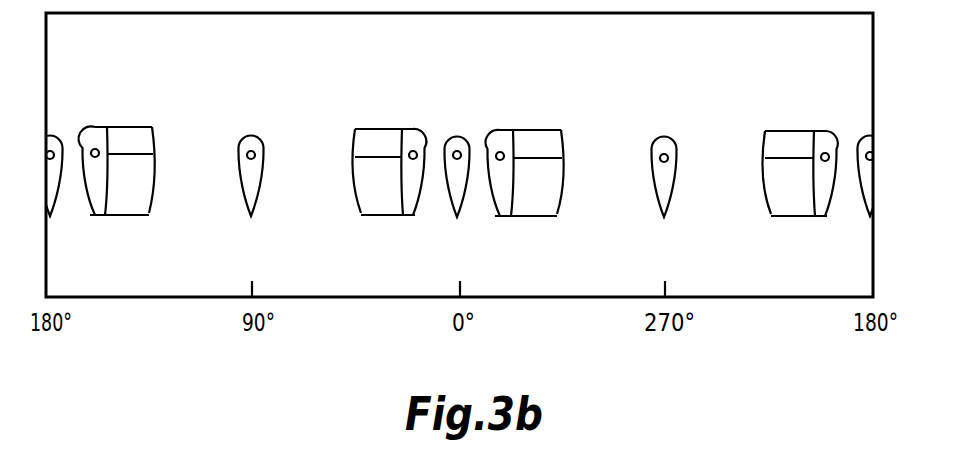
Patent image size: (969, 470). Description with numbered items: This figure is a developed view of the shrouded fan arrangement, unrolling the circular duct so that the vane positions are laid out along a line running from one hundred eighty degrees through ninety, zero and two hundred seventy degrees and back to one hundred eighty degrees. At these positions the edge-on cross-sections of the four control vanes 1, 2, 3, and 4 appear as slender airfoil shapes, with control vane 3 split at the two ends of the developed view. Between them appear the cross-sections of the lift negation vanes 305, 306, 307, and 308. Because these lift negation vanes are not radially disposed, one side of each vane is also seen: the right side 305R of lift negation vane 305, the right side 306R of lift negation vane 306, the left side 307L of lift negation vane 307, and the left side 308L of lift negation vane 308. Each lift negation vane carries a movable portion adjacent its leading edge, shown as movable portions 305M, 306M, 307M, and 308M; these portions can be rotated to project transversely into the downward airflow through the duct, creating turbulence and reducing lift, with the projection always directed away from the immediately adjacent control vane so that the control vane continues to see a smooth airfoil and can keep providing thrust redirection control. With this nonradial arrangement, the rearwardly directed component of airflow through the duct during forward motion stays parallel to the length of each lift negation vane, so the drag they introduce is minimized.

The control vane 1 is at (457, 217).
The control vane 2 is at (251, 216).
The control vane 3 is at (54, 129).
The control vane 4 is at (664, 217).
The lift negation vane 305 is at (402, 129).
The movable portion of lift negation vane 305 305M is at (362, 129).
The right side of lift negation vane 305 305R is at (392, 216).
The lift negation vane 306 is at (107, 127).
The movable portion of lift negation vane 306 306M is at (160, 112).
The right side of lift negation vane 306 306R is at (121, 216).
The lift negation vane 307 is at (822, 131).
The movable portion of lift negation vane 307 307M is at (773, 131).
The left side of lift negation vane 307 307L is at (792, 217).
The lift negation vane 308 is at (503, 130).
The movable portion of lift negation vane 308 308M is at (541, 130).
The left side of lift negation vane 308 308L is at (532, 217).